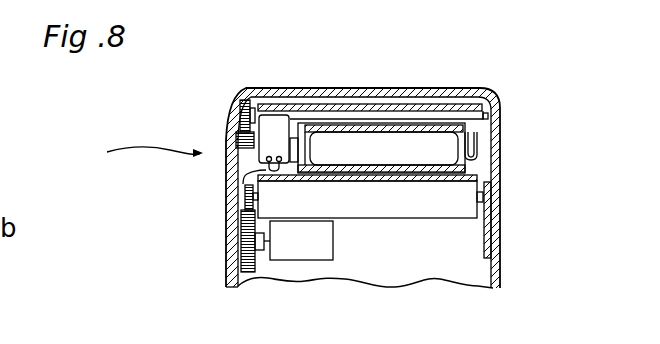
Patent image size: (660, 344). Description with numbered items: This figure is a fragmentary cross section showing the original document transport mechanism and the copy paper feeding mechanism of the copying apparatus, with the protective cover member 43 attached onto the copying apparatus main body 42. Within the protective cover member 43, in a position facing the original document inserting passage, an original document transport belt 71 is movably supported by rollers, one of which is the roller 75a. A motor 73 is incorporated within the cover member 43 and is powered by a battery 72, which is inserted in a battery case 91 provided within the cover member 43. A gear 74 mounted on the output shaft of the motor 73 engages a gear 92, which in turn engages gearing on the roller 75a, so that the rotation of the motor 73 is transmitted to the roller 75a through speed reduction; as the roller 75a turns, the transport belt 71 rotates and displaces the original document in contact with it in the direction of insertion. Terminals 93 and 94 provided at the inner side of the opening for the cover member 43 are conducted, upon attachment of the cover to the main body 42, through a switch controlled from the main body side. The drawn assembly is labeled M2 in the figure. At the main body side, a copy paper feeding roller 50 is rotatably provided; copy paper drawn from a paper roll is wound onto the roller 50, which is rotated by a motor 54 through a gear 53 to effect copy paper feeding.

The copying apparatus main body 42 is at (503, 263).
The protective cover member 43 is at (497, 204).
The copy paper feeding roller 50 is at (450, 210).
The gear 53 is at (243, 252).
The motor 54 is at (298, 245).
The original document transport belt 71 is at (472, 104).
The battery 72 is at (332, 147).
The motor 73 is at (275, 128).
The gear 74 is at (237, 140).
The roller 75a is at (432, 113).
The battery case 91 is at (386, 118).
The gear 92 is at (243, 103).
The terminal 93 is at (503, 208).
The terminal 94 is at (245, 189).
The drive unit M2 is at (131, 158).